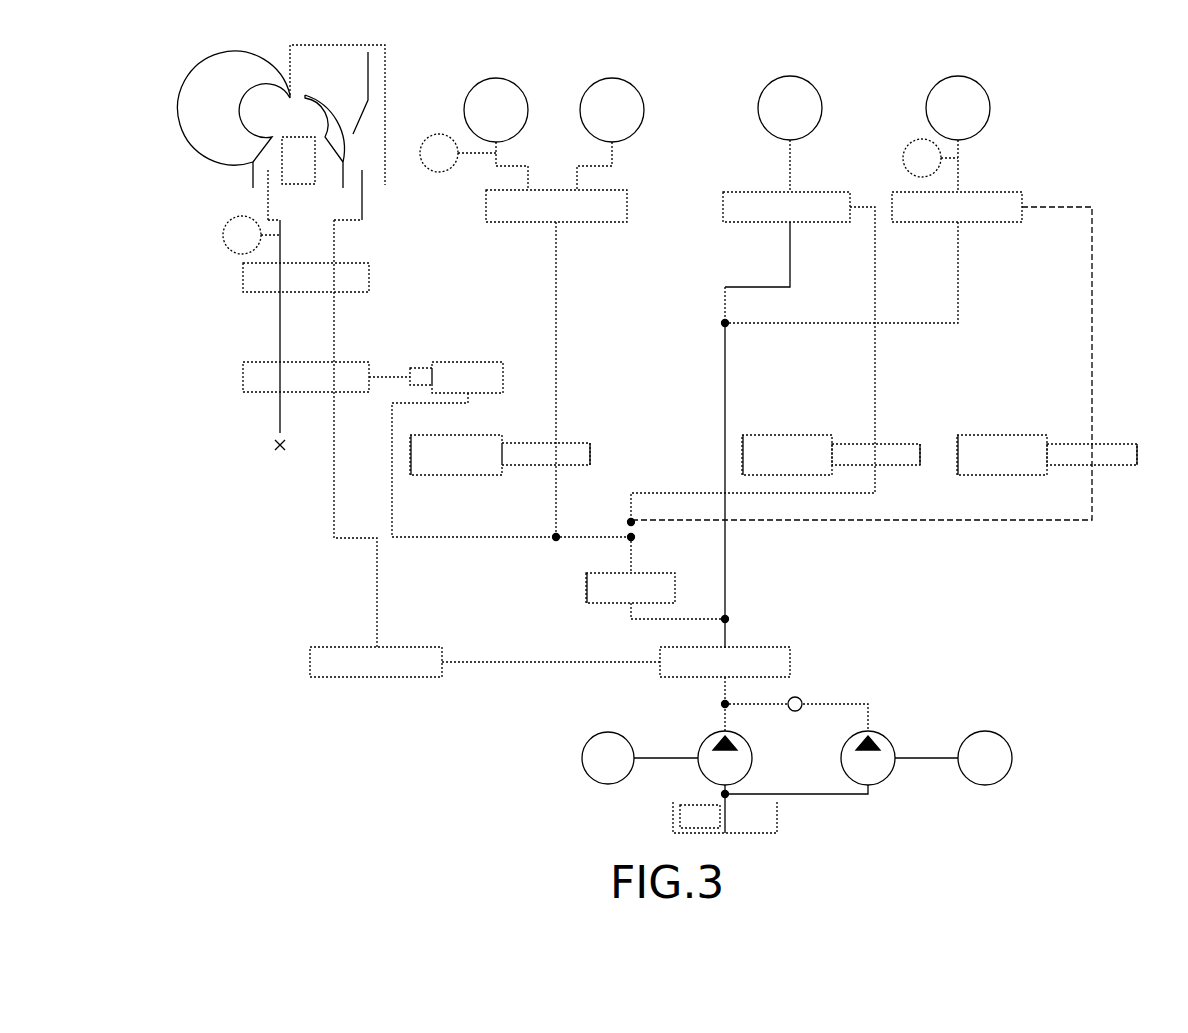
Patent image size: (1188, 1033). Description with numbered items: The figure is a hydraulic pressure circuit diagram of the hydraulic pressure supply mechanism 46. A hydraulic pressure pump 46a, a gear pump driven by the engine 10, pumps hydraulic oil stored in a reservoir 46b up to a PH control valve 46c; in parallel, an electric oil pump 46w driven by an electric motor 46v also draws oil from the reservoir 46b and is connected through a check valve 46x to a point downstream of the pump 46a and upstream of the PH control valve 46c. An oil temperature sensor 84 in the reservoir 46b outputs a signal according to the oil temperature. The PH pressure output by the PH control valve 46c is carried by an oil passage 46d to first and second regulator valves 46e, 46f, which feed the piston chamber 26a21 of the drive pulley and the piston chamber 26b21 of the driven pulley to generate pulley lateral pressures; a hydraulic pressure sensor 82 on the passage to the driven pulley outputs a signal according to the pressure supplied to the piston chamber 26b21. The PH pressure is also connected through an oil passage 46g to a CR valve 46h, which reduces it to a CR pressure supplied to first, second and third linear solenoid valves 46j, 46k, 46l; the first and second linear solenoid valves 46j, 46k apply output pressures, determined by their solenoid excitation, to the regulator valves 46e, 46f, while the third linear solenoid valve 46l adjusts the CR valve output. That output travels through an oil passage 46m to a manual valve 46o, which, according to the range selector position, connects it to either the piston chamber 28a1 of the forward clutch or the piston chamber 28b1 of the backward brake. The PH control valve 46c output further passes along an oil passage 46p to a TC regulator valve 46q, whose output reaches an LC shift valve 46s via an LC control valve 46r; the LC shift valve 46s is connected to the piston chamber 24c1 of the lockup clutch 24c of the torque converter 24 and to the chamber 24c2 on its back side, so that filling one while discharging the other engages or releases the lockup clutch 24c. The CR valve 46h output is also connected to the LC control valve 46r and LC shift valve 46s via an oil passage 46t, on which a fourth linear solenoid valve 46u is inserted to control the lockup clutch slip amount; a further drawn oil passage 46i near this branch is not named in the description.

The torque converter 24 is at (240, 104).
The piston chamber 24c1 is at (345, 50).
The lockup clutch 24c is at (370, 88).
The chamber on back side 24c2 is at (368, 172).
The hydraulic pressure sensor 82 is at (236, 216).
The piston chamber (FWD) 28a1 is at (494, 78).
The piston chamber (RVS) 28b1 is at (610, 78).
The piston chamber (DR) 26a21 is at (784, 78).
The piston chamber (DN) 26b21 is at (952, 78).
The manual valve 46o is at (577, 224).
The first regulator valve 46e is at (808, 192).
The second regulator valve 46f is at (974, 192).
The LC shift valve 46s is at (346, 294).
The LC control valve 46r is at (346, 362).
The fourth linear solenoid valve 46u is at (464, 362).
The third linear solenoid valve 46l is at (446, 436).
The first linear solenoid valve 46j is at (748, 436).
The second linear solenoid valve 46k is at (962, 436).
The CR valve 46h is at (650, 574).
The PH control valve 46c is at (744, 648).
The TC regulator valve 46q is at (378, 648).
The oil passage 46m is at (558, 352).
The oil passage 46t is at (446, 538).
The oil passage 46i is at (630, 562).
The oil passage 46g is at (670, 622).
The oil passage 46d is at (727, 574).
The oil passage 46p is at (532, 662).
The hydraulic pressure supply mechanism 46 is at (876, 584).
The engine 10 is at (606, 732).
The hydraulic pressure pump 46a is at (752, 760).
The check valve 46x is at (795, 711).
The electric oil pump 46w is at (876, 736).
The electric motor 46v is at (994, 736).
The reservoir 46b is at (768, 815).
The oil temperature sensor 84 is at (700, 816).